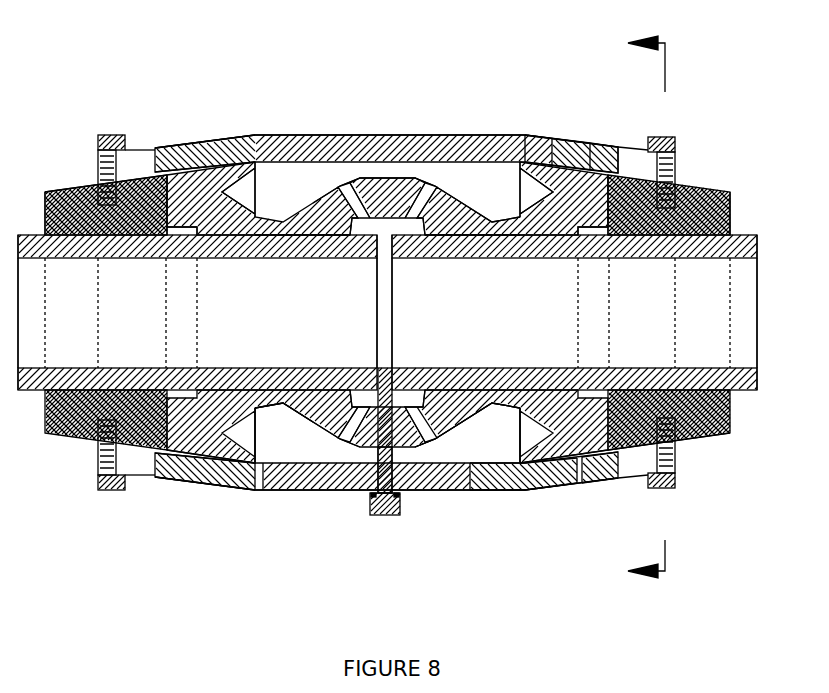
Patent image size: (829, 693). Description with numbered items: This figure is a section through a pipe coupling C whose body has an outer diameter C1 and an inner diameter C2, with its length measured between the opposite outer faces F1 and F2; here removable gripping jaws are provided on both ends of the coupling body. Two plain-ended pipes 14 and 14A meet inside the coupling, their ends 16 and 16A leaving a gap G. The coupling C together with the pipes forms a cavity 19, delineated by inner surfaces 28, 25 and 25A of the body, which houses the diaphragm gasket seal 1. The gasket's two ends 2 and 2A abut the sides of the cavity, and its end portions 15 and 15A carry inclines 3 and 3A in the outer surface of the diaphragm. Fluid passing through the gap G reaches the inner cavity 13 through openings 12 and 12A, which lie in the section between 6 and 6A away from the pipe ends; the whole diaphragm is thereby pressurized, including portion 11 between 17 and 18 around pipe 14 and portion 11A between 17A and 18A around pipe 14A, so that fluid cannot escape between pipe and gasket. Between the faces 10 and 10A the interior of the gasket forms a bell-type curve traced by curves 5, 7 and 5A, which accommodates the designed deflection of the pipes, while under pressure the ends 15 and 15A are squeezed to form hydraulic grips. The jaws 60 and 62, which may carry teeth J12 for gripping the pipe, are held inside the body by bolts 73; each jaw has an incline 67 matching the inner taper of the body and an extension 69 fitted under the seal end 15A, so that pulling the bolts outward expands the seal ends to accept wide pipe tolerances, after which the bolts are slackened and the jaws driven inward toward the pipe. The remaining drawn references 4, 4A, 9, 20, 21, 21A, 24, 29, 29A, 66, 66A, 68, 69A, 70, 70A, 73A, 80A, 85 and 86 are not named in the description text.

The diaphragm gasket seal 1 is at (338, 468).
The end of gasket 2 is at (200, 378).
The end of gasket 2A is at (590, 468).
The incline 3 is at (218, 490).
The incline 3A is at (572, 470).
The section line / retaining segment 4 is at (230, 498).
The second retaining segment 4A is at (520, 482).
The curve 5 is at (315, 197).
The curve 5A is at (458, 195).
The gasket section boundary 6 is at (330, 228).
The gasket section boundary 6A is at (440, 230).
The curve 7 is at (400, 177).
The arcuate hump 9 is at (366, 183).
The face of gasket 10 is at (265, 455).
The face of gasket 10A is at (515, 458).
The diaphragm portion 11 is at (330, 258).
The diaphragm portion 11A is at (490, 258).
The opening 12 is at (352, 230).
The opening 12A is at (420, 230).
The inner cavity 13 is at (312, 487).
The pipe 14 is at (275, 250).
The pipe 14A is at (440, 258).
The end portion of gasket 15 is at (213, 168).
The end portion of gasket 15A is at (593, 160).
The end of pipe 16 is at (375, 385).
The end of pipe 16A is at (410, 385).
The boundary of gasket portion 17 is at (178, 372).
The boundary of gasket portion 17A is at (628, 372).
The boundary of gasket portion 18 is at (305, 400).
The boundary of gasket portion 18A is at (468, 395).
The cavity 19 is at (362, 385).
The ring lower surface 20 is at (232, 395).
The first pipe end 21 is at (38, 258).
The second pipe end 21A is at (705, 258).
The nut 24 is at (388, 516).
The inner surface 25 is at (193, 168).
The inner surface 25A is at (565, 150).
The inner surface 28 is at (460, 185).
The first split 29 is at (262, 488).
The second split 29A is at (505, 488).
The jaw 60 is at (55, 228).
The jaw 62 is at (55, 438).
The first wedge ring 66 is at (190, 190).
The second wedge ring 66A is at (560, 215).
The incline of jaw 67 is at (62, 187).
The upper flange 68 is at (100, 198).
The extension of jaw 69 is at (233, 225).
The second V-notch 69A is at (580, 235).
The first relief groove 70 is at (178, 258).
The second relief groove 70A is at (600, 258).
The bolt 73 is at (100, 136).
The bolt clearance 73A is at (143, 160).
The second upper flange 80A is at (710, 216).
The center bolt 85 is at (380, 340).
The center bolt shank 86 is at (393, 462).
The coupling body C is at (372, 130).
The outer diameter of coupling C1 is at (458, 493).
The inner diameter of coupling C2 is at (150, 258).
The outer face of coupling F1 is at (98, 173).
The outer face of coupling F2 is at (676, 178).
The gap G is at (392, 300).
The teeth J12 is at (108, 258).